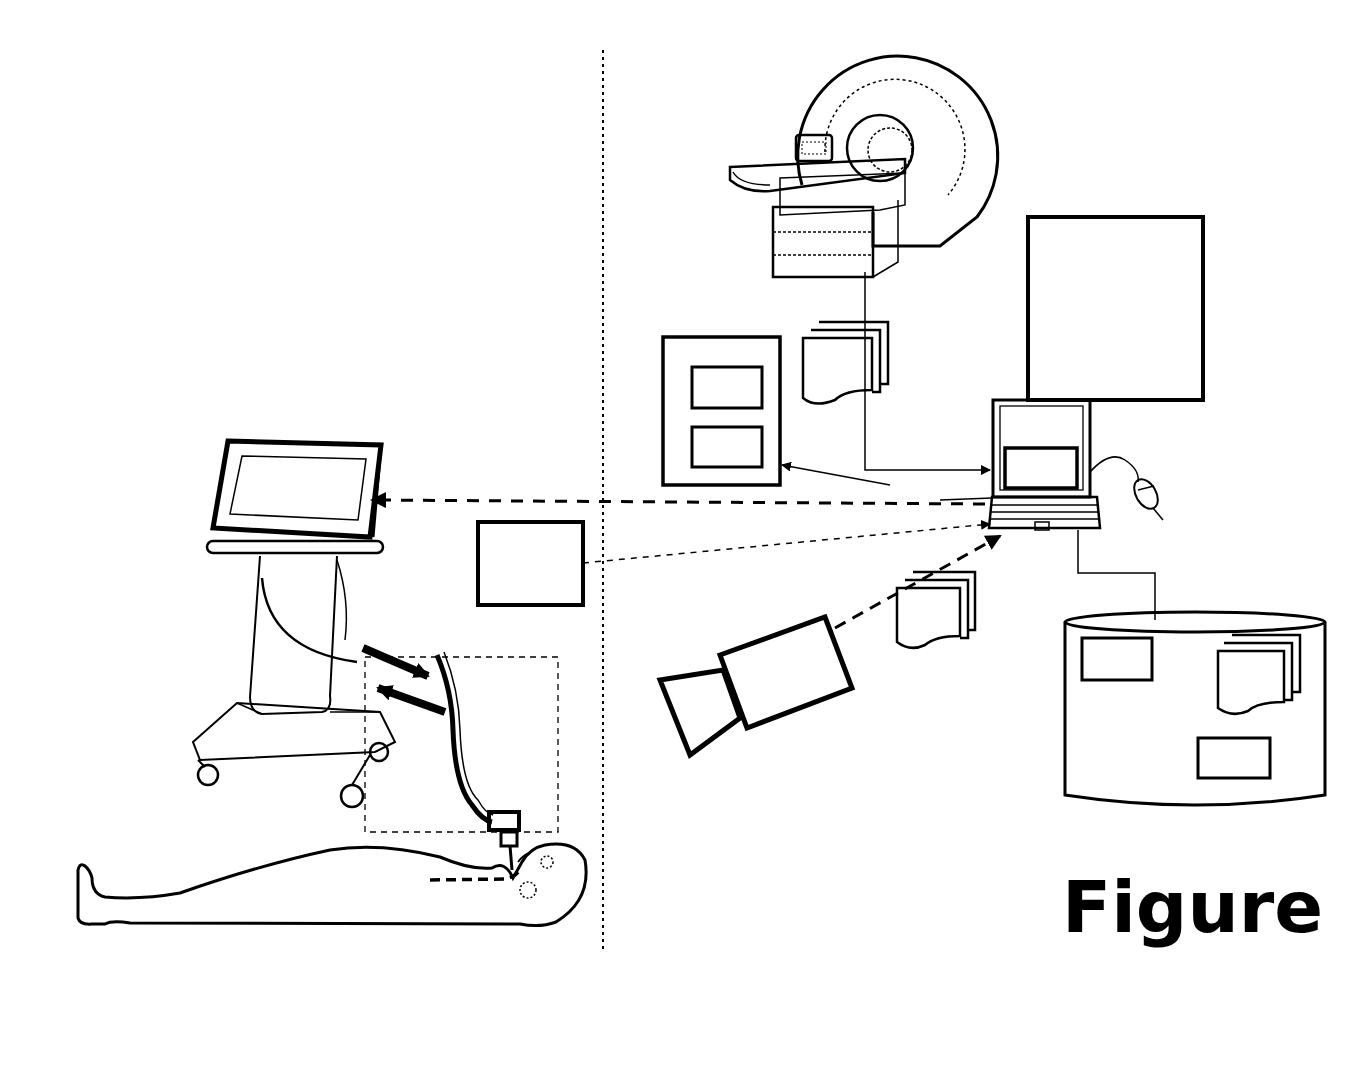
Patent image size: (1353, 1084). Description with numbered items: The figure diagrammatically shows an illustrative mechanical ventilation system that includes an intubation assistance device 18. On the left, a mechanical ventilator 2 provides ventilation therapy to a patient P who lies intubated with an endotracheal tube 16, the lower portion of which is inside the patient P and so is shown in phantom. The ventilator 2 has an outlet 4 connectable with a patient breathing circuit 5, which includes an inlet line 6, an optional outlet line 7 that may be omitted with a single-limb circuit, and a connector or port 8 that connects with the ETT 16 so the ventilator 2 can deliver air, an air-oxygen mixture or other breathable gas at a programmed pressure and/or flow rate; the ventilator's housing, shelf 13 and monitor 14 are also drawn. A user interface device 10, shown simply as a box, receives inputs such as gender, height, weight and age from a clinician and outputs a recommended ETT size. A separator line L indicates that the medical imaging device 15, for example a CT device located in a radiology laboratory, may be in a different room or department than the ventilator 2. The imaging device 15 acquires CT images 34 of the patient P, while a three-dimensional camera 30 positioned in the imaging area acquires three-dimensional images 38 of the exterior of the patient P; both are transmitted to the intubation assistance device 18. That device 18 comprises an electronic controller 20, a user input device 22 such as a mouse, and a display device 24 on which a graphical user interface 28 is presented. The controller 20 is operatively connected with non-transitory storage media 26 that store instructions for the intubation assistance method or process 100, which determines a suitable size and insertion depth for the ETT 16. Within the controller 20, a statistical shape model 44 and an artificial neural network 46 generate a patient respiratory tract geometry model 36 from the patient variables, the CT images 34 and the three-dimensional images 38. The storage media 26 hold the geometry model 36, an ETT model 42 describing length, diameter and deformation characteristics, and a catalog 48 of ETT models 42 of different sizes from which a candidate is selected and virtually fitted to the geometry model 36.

The mechanical ventilator 2 is at (254, 624).
The outlet 4 is at (338, 557).
The patient breathing circuit 5 is at (460, 759).
The inlet line 6 is at (455, 722).
The outlet line 7 is at (447, 722).
The connector or port 8 is at (505, 811).
The user interface device 10 is at (550, 581).
The shelf 13 is at (271, 546).
The display monitor 14 is at (307, 502).
The medical imaging device 15 is at (782, 101).
The endotracheal tube (ETT) 16 is at (470, 896).
The intubation assistance device 18 is at (1023, 429).
The electronic controller 20 is at (682, 417).
The user input device 22 is at (1149, 501).
The display device 24 is at (1058, 445).
The non-transitory storage media 26 is at (1195, 667).
The graphical user interface (GUI) 28 is at (1058, 485).
The 3D camera 30 is at (748, 750).
The CT images 34 is at (856, 388).
The patient respiratory tract geometry model 36 is at (1135, 675).
The 3D images 38 is at (948, 635).
The ETT model 42 is at (1251, 773).
The statistical shape model (SSM) 44 is at (742, 402).
The artificial neural network (ANN) 46 is at (742, 462).
The catalog 48 is at (1270, 697).
The intubation assistance method or process 100 is at (1080, 394).
The patient P is at (325, 860).
The separator line L is at (606, 124).